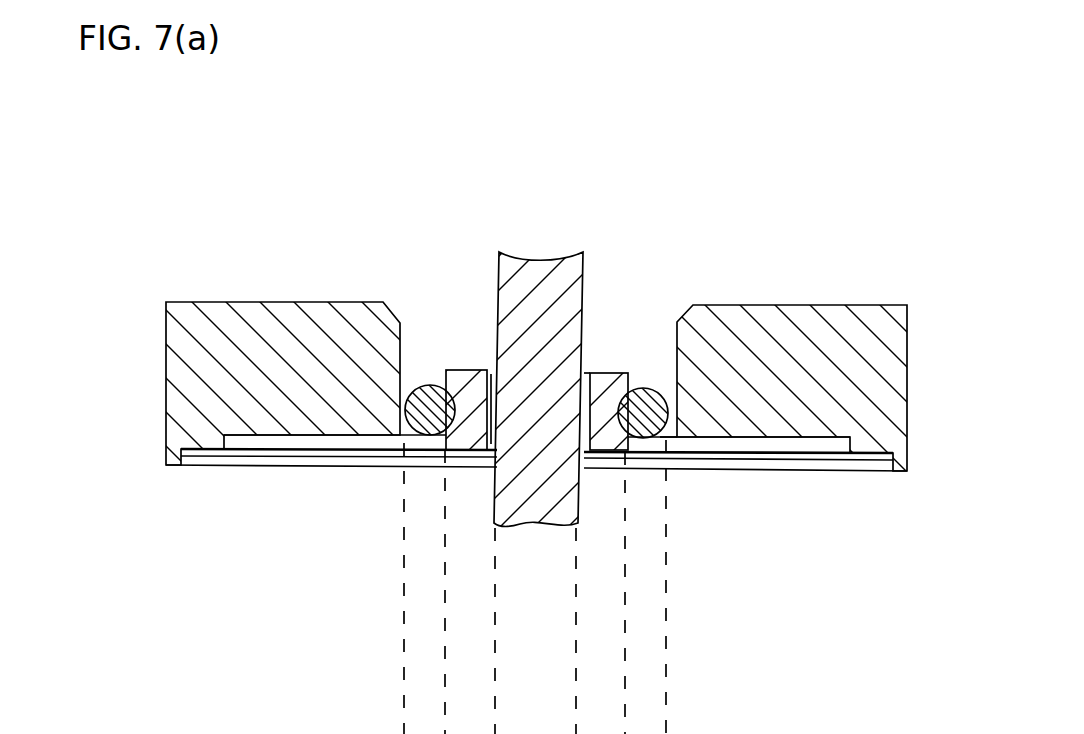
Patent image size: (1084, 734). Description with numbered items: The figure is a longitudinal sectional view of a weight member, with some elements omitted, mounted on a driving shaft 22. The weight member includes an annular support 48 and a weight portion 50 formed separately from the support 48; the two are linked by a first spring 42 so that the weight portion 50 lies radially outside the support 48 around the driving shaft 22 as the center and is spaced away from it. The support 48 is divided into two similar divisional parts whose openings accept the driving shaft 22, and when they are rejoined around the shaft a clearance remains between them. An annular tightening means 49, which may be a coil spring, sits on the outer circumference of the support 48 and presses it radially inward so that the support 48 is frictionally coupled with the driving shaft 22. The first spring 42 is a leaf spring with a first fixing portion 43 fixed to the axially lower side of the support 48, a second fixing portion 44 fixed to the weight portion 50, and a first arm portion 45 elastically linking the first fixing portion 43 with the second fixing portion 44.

The driving shaft 22 is at (530, 493).
The first spring 42 is at (529, 518).
The first fixing portion 43 is at (468, 448).
The second fixing portion 44 is at (226, 457).
The first arm portion 45 is at (278, 450).
The support 48 is at (613, 377).
The annular tightening means 49 is at (430, 394).
The weight portion 50 is at (208, 328).